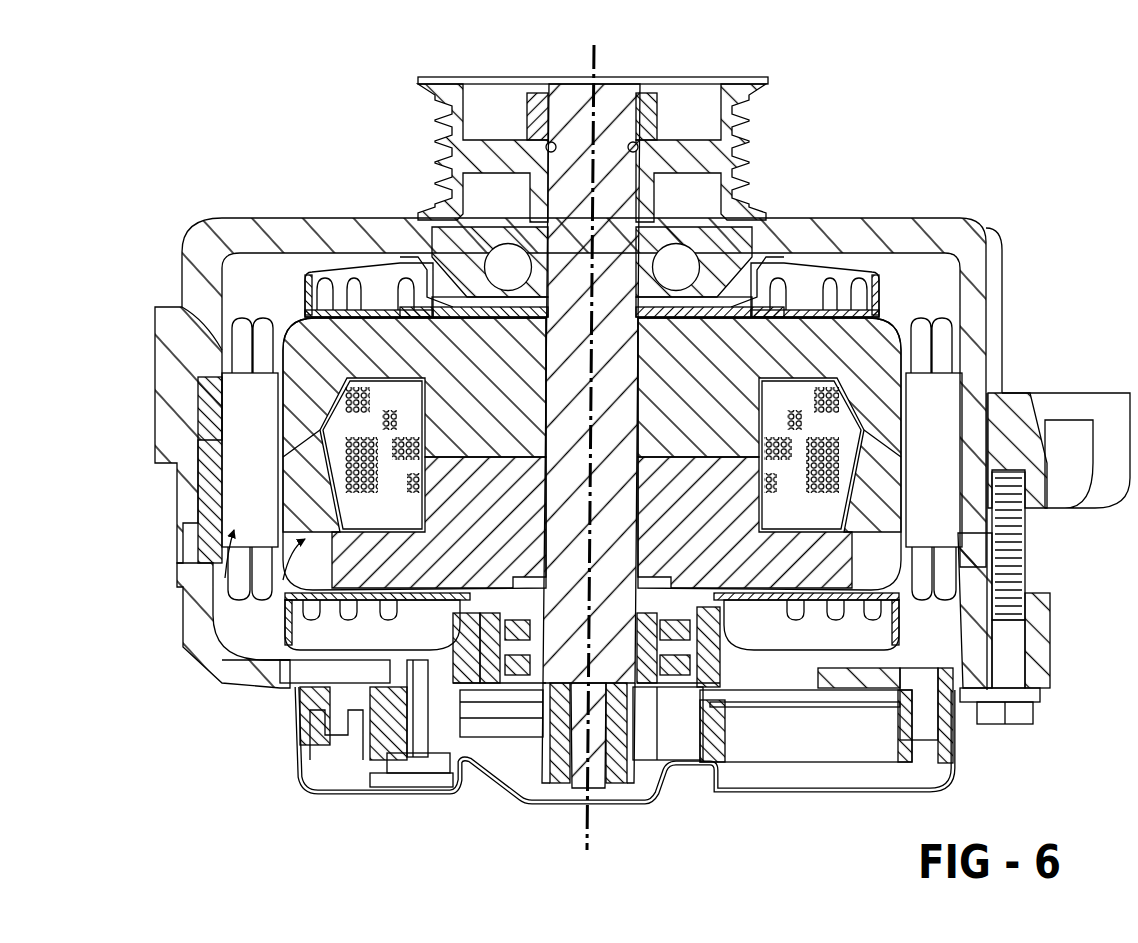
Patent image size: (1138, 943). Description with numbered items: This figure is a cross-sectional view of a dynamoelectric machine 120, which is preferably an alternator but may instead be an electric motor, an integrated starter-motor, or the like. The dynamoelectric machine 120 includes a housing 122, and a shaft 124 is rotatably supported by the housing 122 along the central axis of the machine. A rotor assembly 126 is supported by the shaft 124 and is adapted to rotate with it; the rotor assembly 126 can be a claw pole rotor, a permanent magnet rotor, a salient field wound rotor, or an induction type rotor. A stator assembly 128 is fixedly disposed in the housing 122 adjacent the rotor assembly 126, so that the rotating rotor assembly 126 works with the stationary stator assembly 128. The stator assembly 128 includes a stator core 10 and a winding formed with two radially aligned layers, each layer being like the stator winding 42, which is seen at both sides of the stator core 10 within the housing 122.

The dynamoelectric machine 120 is at (373, 148).
The housing 122 is at (989, 226).
The stator winding 42 is at (226, 351).
The stator core 10 is at (250, 473).
The stator assembly 128 is at (207, 562).
The rotor assembly 126 is at (290, 555).
The shaft 124 is at (613, 662).